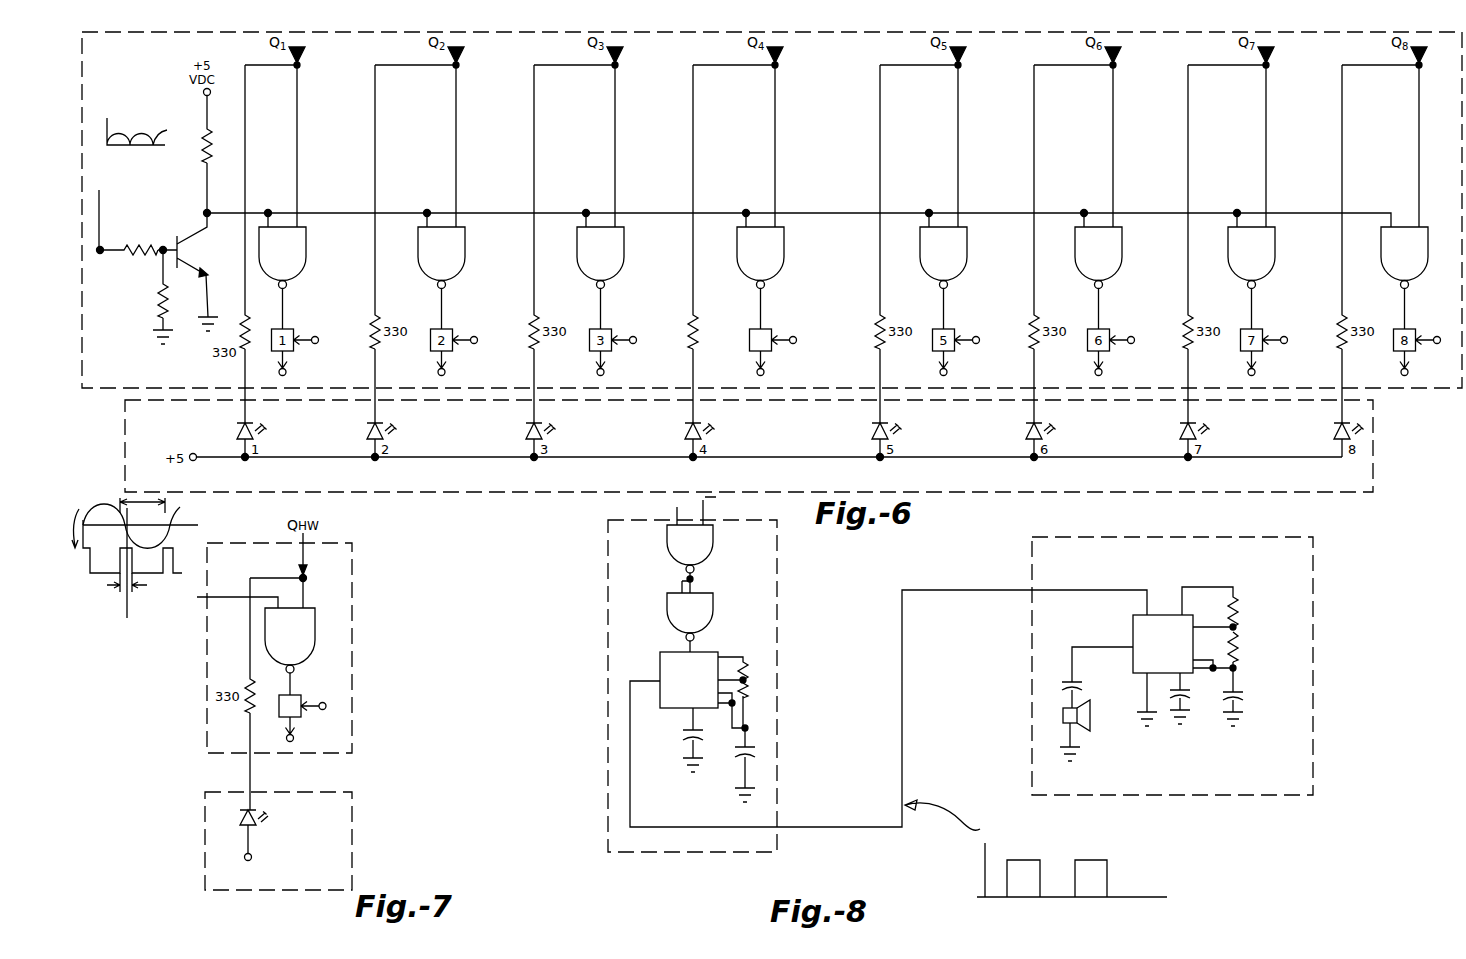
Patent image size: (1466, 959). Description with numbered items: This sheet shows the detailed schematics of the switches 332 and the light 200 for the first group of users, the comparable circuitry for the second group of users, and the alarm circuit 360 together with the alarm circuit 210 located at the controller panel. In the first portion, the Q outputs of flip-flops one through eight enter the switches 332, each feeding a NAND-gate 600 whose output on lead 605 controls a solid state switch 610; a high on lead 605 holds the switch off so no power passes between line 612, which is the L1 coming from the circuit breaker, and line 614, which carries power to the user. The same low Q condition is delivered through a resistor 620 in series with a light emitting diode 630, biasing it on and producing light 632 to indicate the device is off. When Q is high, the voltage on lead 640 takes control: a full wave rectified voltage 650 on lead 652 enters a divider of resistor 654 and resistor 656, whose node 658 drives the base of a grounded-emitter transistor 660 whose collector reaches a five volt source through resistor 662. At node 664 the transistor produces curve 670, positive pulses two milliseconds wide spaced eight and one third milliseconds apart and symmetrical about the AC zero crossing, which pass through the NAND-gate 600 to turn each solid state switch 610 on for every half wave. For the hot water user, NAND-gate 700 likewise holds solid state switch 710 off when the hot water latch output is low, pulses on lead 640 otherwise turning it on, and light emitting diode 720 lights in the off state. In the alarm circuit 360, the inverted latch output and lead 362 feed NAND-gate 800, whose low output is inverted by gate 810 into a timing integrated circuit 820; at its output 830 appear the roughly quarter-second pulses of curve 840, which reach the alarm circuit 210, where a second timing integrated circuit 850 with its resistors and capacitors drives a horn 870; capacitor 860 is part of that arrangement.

In FIG. 6, the light 200 is at (775, 446).
In FIG. 7, the light 200 is at (315, 841).
In FIG. 8, the alarm circuit 210 is at (1204, 666).
In FIG. 6, the switches 332 is at (772, 228).
In FIG. 7, the switches 332 is at (315, 648).
In FIG. 8, the alarm circuit 360 is at (692, 710).
In FIG. 8, the lead 362 is at (647, 511).
In FIG. 6, the NAND-gate 600 is at (793, 258).
In FIG. 6, the lead 605 is at (800, 303).
In FIG. 6, the solid state switch 610 is at (795, 325).
In FIG. 6, the line 612 is at (791, 395).
In FIG. 6, the line 614 is at (756, 393).
In FIG. 6, the resistor 620 is at (711, 318).
In FIG. 6, the light emitting diode 630 is at (665, 455).
In FIG. 6, the light 632 is at (724, 457).
In FIG. 6, the lead 640 is at (747, 330).
In FIG. 7, the lead 640 is at (210, 625).
In FIG. 6, the full wave rectified voltage 650 is at (133, 106).
In FIG. 6, the lead 652 is at (129, 243).
In FIG. 6, the resistor 654 is at (179, 261).
In FIG. 6, the resistor 656 is at (146, 297).
In FIG. 6, the node 658 is at (163, 208).
In FIG. 6, the transistor 660 is at (241, 219).
In FIG. 6, the resistor 662 is at (191, 130).
In FIG. 6, the node 664 is at (244, 178).
In FIG. 7, the curve 670 is at (135, 592).
In FIG. 7, the NAND-gate 700 is at (332, 640).
In FIG. 7, the solid state switch 710 is at (339, 712).
In FIG. 7, the light emitting diode 720 is at (200, 842).
In FIG. 8, the NAND-gate 800 is at (627, 549).
In FIG. 8, the gate 810 is at (627, 617).
In FIG. 8, the timing integrated circuit 820 is at (655, 722).
In FIG. 8, the output 830 is at (888, 710).
In FIG. 8, the curve 840 is at (1030, 881).
In FIG. 8, the second timing integrated circuit 850 is at (1200, 636).
In FIG. 8, the capacitor 860 is at (1089, 663).
In FIG. 8, the horn 870 is at (1105, 744).